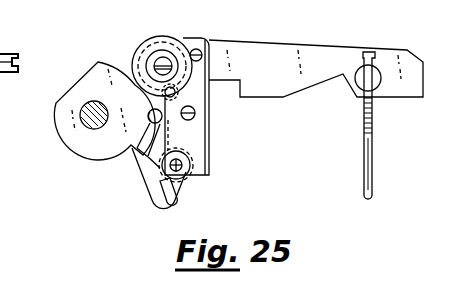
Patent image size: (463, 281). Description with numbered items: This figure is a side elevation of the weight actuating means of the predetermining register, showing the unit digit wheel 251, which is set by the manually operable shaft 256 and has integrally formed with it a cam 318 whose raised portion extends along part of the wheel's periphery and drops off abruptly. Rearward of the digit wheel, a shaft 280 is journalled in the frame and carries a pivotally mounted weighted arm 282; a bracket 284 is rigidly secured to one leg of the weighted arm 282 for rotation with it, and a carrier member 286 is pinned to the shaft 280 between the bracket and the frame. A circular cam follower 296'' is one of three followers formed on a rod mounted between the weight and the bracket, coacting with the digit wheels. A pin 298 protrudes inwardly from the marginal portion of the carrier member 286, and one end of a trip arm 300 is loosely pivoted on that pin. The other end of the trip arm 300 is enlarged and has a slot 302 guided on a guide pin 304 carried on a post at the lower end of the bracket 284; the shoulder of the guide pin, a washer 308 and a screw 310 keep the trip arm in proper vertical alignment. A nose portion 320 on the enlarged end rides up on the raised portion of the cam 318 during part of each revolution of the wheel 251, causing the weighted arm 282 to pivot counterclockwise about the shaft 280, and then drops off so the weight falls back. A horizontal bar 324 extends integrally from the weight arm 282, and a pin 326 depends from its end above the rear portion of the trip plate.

The unit digit wheel 251 is at (57, 125).
The manually operable shaft 256 is at (90, 101).
The cam 318 is at (56, 105).
The shaft 280 is at (166, 60).
The weighted arm 282 is at (253, 42).
The bracket 284 is at (212, 165).
The carrier member 286 is at (156, 45).
The cam follower 296'' is at (131, 104).
The pin 298 is at (178, 96).
The trip arm 300 is at (144, 147).
The slot 302 is at (173, 192).
The guide pin 304 is at (181, 152).
The washer 308 is at (196, 158).
The screw 310 is at (196, 171).
The nose portion 320 is at (135, 178).
The horizontal bar 324 is at (362, 68).
The pin 326 is at (374, 122).